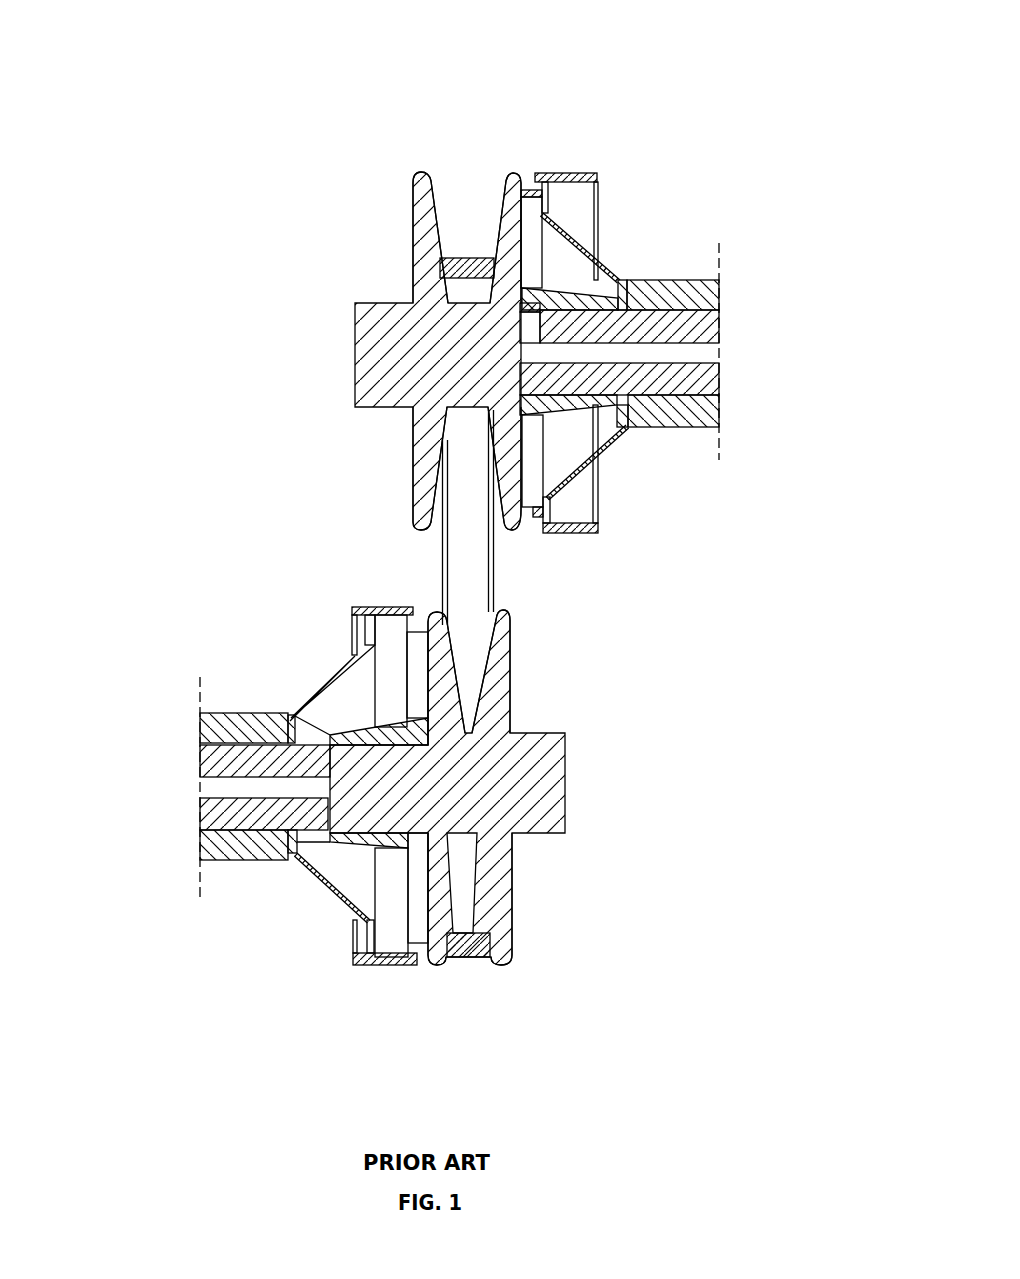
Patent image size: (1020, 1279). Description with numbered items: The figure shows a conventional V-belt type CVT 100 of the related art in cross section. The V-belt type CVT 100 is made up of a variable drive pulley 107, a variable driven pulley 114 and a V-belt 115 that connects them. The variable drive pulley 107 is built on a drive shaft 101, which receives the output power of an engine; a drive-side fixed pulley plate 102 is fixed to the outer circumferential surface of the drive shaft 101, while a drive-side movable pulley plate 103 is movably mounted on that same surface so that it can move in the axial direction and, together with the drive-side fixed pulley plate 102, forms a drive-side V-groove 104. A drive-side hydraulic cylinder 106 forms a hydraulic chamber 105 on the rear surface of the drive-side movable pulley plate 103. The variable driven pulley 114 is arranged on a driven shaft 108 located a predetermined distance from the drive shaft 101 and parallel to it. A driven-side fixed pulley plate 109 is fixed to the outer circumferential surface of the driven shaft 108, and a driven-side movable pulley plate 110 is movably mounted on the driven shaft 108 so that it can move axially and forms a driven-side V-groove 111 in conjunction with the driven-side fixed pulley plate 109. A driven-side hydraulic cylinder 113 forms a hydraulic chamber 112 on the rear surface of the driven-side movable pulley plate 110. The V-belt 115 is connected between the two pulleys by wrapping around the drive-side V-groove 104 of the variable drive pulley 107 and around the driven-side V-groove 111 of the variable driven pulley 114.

The V-belt type CVT 100 is at (423, 541).
The drive shaft 101 is at (403, 298).
The drive-side fixed pulley plate 102 is at (412, 228).
The drive-side movable pulley plate 103 is at (510, 177).
The drive-side V-groove 104 is at (467, 233).
The hydraulic chamber 105 is at (568, 443).
The drive-side hydraulic cylinder 106 is at (608, 262).
The variable drive pulley 107 is at (464, 282).
The driven shaft 108 is at (552, 838).
The driven-side fixed pulley plate 109 is at (495, 676).
The driven-side movable pulley plate 110 is at (443, 905).
The driven-side V-groove 111 is at (472, 892).
The hydraulic chamber 112 is at (353, 878).
The driven-side hydraulic cylinder 113 is at (312, 880).
The variable driven pulley 114 is at (458, 837).
The V-belt 115 is at (473, 575).